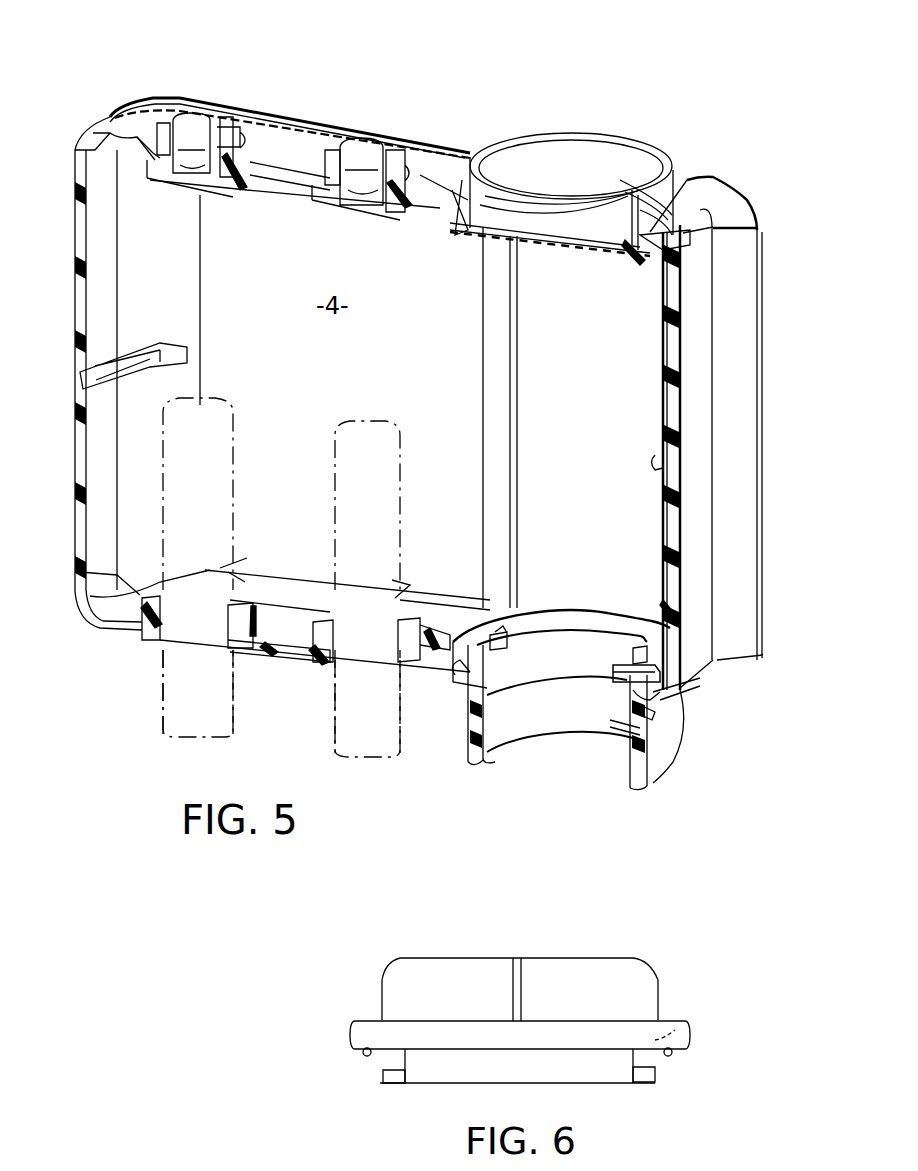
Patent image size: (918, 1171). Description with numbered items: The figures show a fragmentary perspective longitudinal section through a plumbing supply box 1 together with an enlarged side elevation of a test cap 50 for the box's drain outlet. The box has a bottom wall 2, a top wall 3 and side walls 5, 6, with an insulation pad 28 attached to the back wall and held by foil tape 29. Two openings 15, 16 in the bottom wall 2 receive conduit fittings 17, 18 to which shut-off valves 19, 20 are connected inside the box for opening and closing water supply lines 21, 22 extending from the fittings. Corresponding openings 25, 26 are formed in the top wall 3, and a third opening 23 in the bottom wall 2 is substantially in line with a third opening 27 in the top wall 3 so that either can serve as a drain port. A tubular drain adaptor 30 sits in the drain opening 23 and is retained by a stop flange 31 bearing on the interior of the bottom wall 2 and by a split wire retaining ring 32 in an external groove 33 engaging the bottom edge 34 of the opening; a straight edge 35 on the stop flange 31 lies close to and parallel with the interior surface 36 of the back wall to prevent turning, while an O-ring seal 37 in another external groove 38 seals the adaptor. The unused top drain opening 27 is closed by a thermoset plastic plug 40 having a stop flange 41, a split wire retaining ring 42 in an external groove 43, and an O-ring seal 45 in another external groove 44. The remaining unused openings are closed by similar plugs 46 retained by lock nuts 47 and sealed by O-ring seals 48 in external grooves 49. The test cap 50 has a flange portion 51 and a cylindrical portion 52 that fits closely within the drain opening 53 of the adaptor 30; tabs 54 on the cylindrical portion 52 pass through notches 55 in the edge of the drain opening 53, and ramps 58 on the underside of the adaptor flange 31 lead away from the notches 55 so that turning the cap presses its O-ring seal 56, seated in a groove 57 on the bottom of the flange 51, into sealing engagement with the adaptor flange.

In FIG. 5, the plumbing supply box 1 is at (180, 65).
In FIG. 5, the bottom wall 2 is at (280, 652).
In FIG. 5, the top wall 3 is at (290, 110).
In FIG. 5, the side wall 5 is at (75, 300).
In FIG. 5, the side wall 6 is at (680, 348).
In FIG. 5, the opening 15 is at (150, 635).
In FIG. 5, the opening 16 is at (330, 655).
In FIG. 5, the conduit fitting 17 is at (247, 558).
In FIG. 5, the conduit fitting 18 is at (402, 585).
In FIG. 5, the shut-off valve 19 is at (197, 487).
In FIG. 5, the shut-off valve 20 is at (375, 510).
In FIG. 5, the water supply line 21 is at (170, 693).
In FIG. 5, the water supply line 22 is at (345, 720).
In FIG. 5, the third opening 23 is at (465, 668).
In FIG. 5, the opening 25 is at (118, 160).
In FIG. 5, the opening 26 is at (320, 180).
In FIG. 5, the third opening 27 is at (472, 218).
In FIG. 5, the insulation pad 28 is at (710, 192).
In FIG. 5, the foil tape 29 is at (740, 192).
In FIG. 5, the tubular drain adaptor 30 is at (656, 628).
In FIG. 5, the stop flange 31 is at (530, 610).
In FIG. 5, the split wire retaining ring 32 is at (660, 715).
In FIG. 5, the external groove 33 is at (640, 730).
In FIG. 5, the bottom edge 34 is at (655, 740).
In FIG. 5, the straight edge 35 is at (598, 595).
In FIG. 5, the interior surface 36 is at (685, 590).
In FIG. 5, the O-ring seal 37 is at (685, 690).
In FIG. 5, the external groove 38 is at (640, 695).
In FIG. 5, the thermoset plastic plug 40 is at (656, 146).
In FIG. 5, the stop flange 41 is at (628, 252).
In FIG. 5, the split wire retaining ring 42 is at (665, 180).
In FIG. 5, the external groove 43 is at (615, 195).
In FIG. 5, the external groove 44 is at (645, 245).
In FIG. 5, the O-ring seal 45 is at (680, 248).
In FIG. 5, the thermoset plastic plug 46 is at (240, 132).
In FIG. 5, the lock nut 47 is at (232, 120).
In FIG. 5, the O-ring seal 48 is at (228, 170).
In FIG. 5, the external groove 49 is at (190, 168).
In FIG. 6, the test cap 50 is at (650, 957).
In FIG. 6, the flange portion 51 is at (670, 1022).
In FIG. 6, the cylindrical portion 52 is at (605, 1078).
In FIG. 5, the drain opening 53 is at (600, 630).
In FIG. 6, the tab 54 is at (392, 1078).
In FIG. 5, the notch 55 is at (500, 650).
In FIG. 6, the O-ring seal 56 is at (672, 1052).
In FIG. 6, the groove 57 is at (690, 1032).
In FIG. 5, the ramp 58 is at (556, 635).
In FIG. 6, the ramp 58 is at (412, 975).